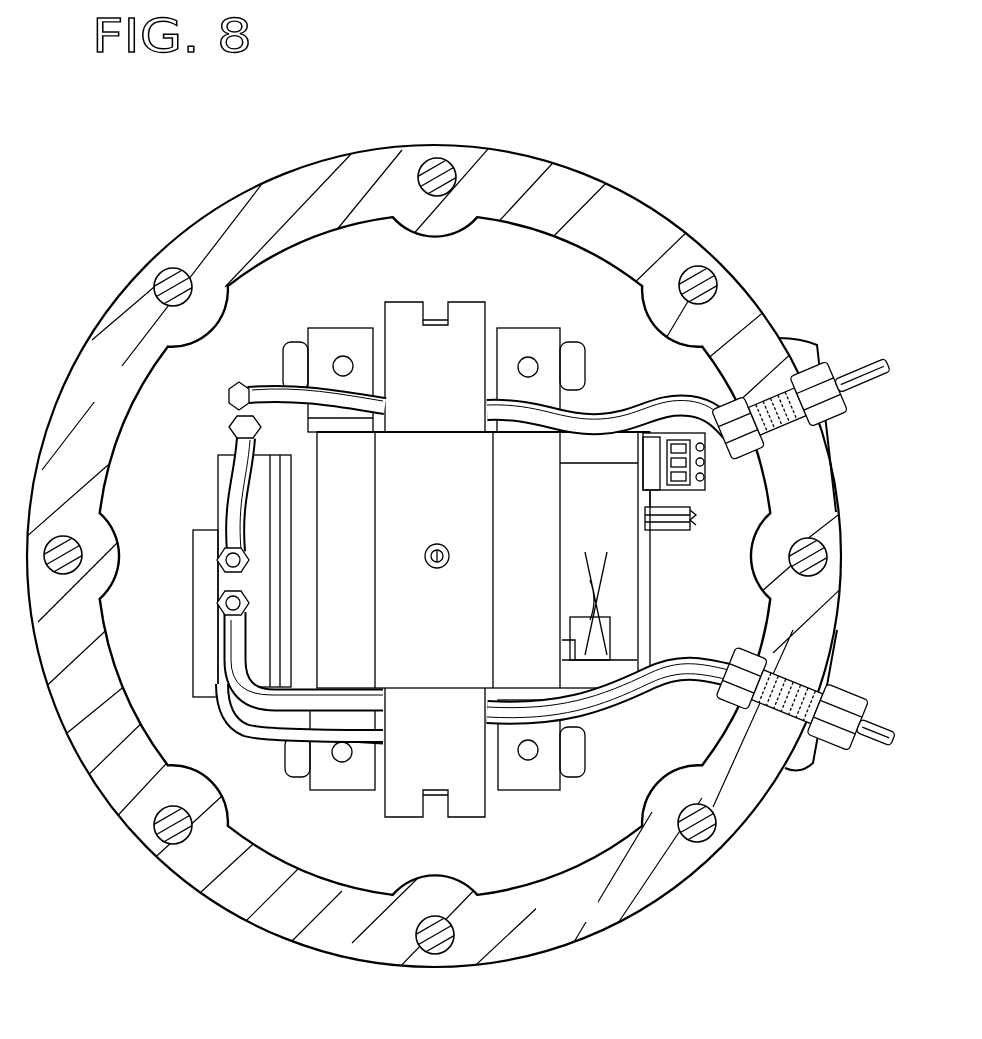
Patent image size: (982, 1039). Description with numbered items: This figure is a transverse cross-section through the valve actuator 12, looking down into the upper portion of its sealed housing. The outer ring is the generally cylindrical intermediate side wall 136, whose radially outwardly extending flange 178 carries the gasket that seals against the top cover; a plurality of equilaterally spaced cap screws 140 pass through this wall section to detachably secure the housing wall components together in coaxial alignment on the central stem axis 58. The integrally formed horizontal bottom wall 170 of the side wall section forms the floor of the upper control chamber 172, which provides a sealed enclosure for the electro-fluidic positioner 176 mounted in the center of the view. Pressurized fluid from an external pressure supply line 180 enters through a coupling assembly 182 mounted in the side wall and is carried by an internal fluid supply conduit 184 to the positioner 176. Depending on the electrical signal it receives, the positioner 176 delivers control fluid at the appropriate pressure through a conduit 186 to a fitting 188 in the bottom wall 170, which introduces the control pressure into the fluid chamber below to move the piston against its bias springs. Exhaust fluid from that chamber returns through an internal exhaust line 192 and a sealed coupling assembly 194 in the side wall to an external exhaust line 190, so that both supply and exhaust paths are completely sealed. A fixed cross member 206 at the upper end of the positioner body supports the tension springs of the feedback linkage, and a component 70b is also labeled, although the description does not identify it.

The valve actuator 12 is at (383, 1035).
The axis 58 is at (441, 545).
The core member 70b is at (472, 330).
The intermediate side wall 136 is at (642, 196).
The cap screws 140 is at (449, 158).
The bottom wall 170 is at (316, 284).
The control chamber 172 is at (85, 752).
The electro-fluidic positioner 176 is at (447, 643).
The flange 178 is at (78, 397).
The pressure supply line 180 is at (853, 755).
The coupling assembly 182 is at (798, 724).
The internal fluid supply conduit 184 is at (233, 683).
The conduit 186 is at (235, 488).
The fitting 188 is at (230, 388).
The external exhaust line 190 is at (820, 406).
The internal exhaust line 192 is at (597, 414).
The sealed coupling assembly 194 is at (828, 469).
The fixed cross member 206 is at (655, 495).